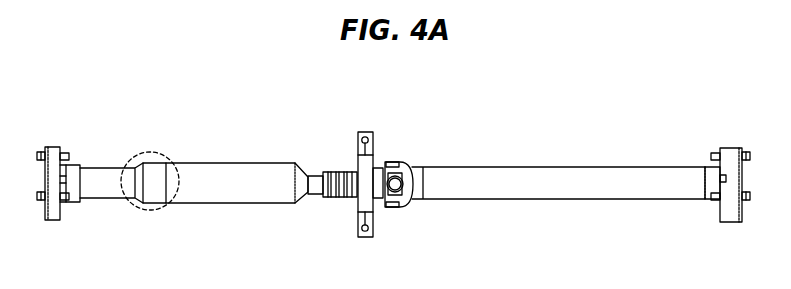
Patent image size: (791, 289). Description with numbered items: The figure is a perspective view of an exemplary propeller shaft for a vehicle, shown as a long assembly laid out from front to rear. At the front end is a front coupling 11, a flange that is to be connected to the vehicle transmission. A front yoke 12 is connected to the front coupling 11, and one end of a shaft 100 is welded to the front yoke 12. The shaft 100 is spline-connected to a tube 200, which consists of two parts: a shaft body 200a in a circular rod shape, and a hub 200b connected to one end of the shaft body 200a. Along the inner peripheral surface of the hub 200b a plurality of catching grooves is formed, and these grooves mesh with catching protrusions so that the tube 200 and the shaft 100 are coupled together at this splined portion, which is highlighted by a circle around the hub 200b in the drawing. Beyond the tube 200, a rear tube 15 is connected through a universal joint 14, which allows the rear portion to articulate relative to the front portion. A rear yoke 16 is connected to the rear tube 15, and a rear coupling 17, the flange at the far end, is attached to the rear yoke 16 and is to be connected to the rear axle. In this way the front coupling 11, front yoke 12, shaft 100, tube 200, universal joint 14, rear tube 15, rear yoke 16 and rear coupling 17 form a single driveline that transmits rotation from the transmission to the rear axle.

The front coupling 11 is at (55, 147).
The front yoke 12 is at (75, 165).
The shaft 100 is at (107, 192).
The tube 200 is at (239, 143).
The hub 200b is at (153, 168).
The shaft body 200a is at (160, 106).
The universal joint 14 is at (397, 160).
The rear tube 15 is at (523, 172).
The rear yoke 16 is at (708, 170).
The rear coupling 17 is at (735, 150).